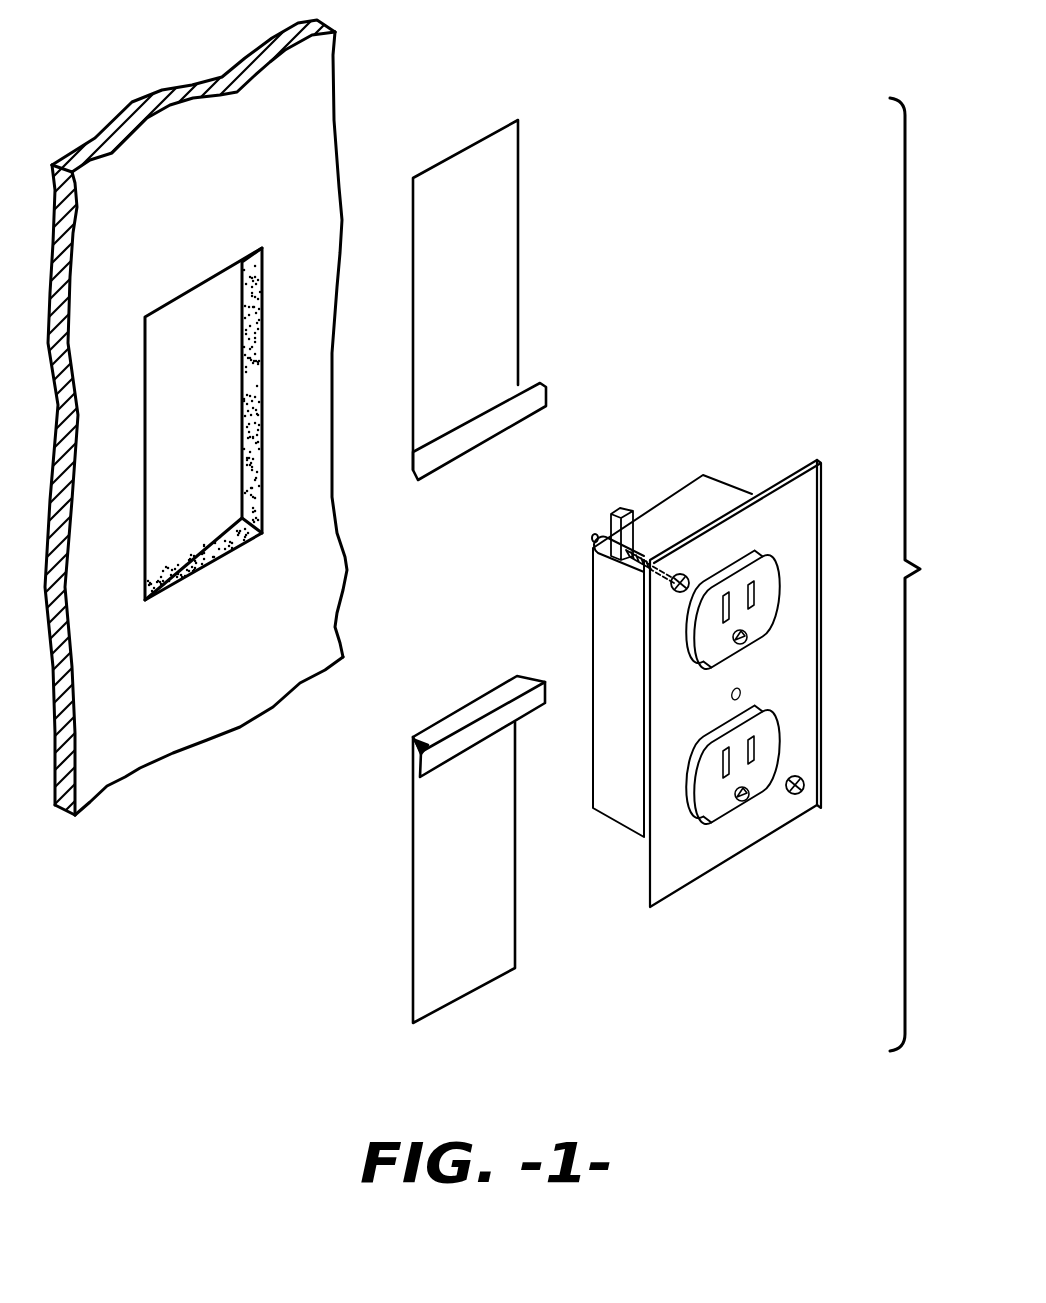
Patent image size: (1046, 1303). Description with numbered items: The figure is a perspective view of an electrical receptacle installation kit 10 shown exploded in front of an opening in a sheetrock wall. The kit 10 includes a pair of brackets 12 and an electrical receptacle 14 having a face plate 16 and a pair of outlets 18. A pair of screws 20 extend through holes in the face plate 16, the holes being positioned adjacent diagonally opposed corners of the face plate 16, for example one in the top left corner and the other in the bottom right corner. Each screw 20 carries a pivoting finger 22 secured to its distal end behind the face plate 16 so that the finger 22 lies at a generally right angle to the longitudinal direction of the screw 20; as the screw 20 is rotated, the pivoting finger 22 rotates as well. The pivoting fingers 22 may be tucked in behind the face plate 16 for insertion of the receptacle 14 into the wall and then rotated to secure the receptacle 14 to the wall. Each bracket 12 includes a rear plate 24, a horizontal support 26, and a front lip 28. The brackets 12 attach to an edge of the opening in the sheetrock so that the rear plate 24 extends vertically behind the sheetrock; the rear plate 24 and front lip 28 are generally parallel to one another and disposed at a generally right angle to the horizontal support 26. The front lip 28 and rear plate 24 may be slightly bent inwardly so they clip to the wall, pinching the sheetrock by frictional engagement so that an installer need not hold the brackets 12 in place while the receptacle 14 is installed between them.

The electrical receptacle installation kit 10 is at (926, 574).
The bracket 12 is at (457, 573).
The electrical receptacle 14 is at (697, 503).
The face plate 16 is at (693, 855).
The outlet 18 is at (767, 590).
The screw 20 is at (677, 593).
The pivoting finger 22 is at (620, 510).
The rear plate 24 is at (522, 275).
The horizontal support 26 is at (490, 702).
The front lip 28 is at (439, 456).